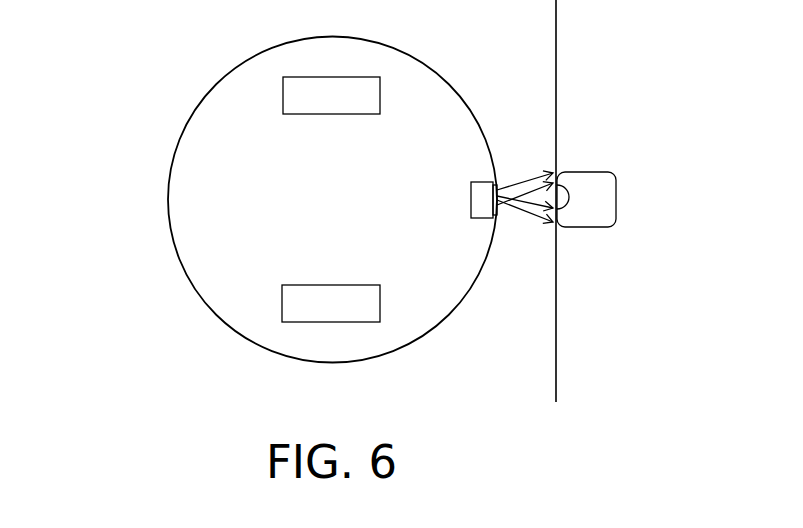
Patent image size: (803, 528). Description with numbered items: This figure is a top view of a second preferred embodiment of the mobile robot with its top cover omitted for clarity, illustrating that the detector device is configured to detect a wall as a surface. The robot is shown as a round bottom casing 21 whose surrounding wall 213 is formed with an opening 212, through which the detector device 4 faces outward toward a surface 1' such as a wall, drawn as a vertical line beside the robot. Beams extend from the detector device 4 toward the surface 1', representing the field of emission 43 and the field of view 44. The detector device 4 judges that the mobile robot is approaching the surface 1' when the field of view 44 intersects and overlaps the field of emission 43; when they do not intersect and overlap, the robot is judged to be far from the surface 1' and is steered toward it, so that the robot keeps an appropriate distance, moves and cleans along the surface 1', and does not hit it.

The bottom casing 21 is at (286, 212).
The surrounding wall 213 is at (168, 178).
The opening 212 is at (497, 218).
The detector device 4 is at (472, 182).
The surface 1' is at (607, 201).
The field of emission 43 is at (569, 197).
The field of view 44 is at (616, 197).